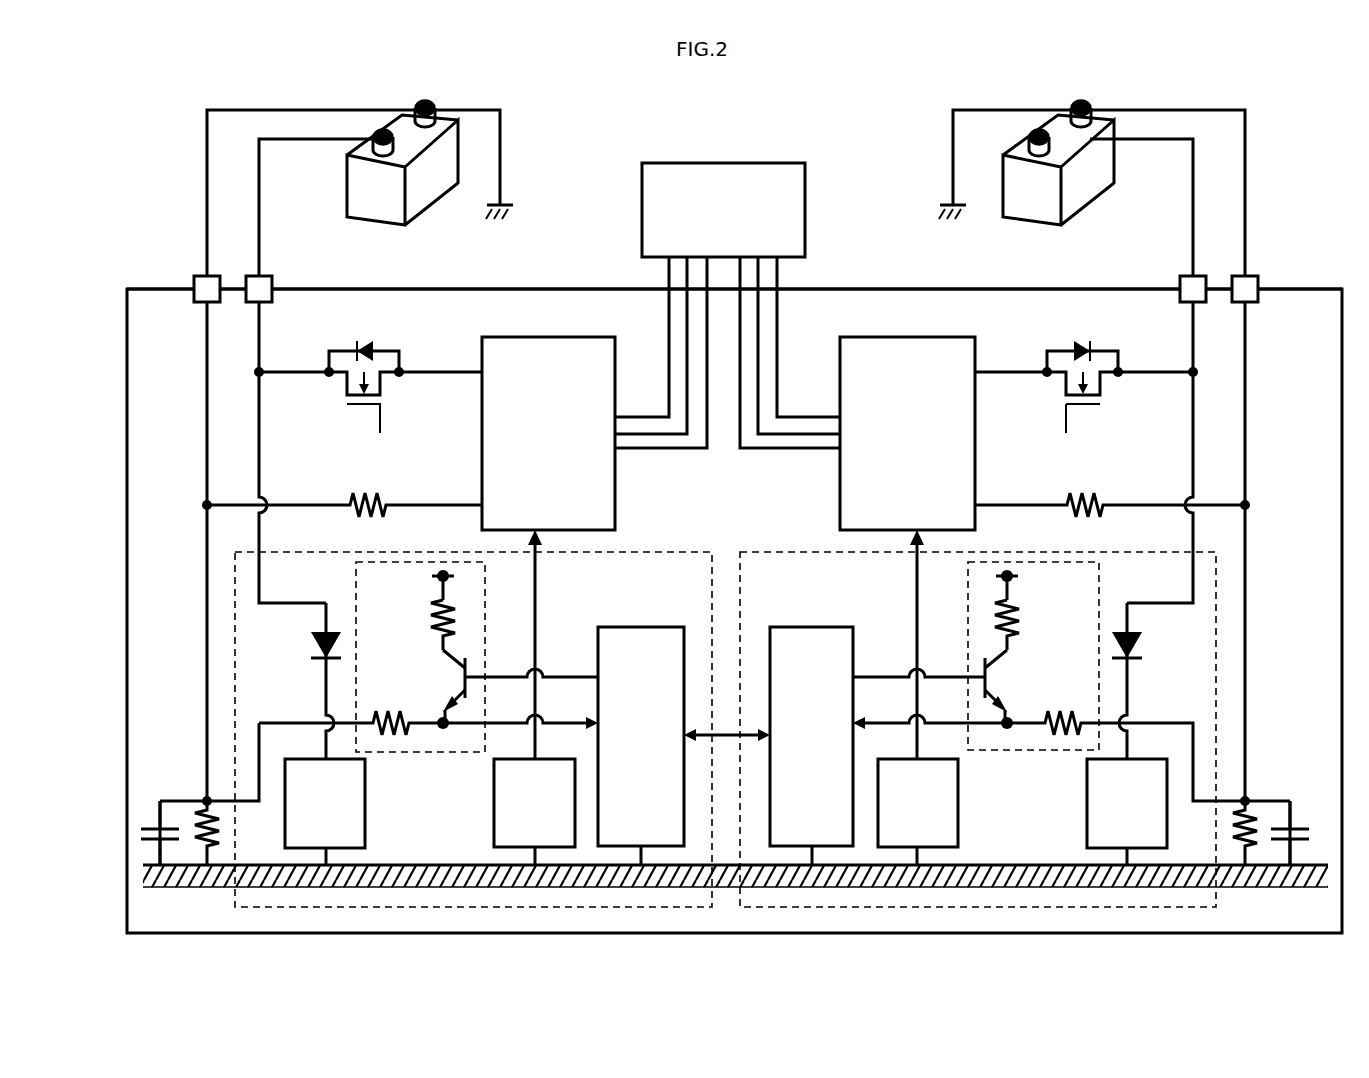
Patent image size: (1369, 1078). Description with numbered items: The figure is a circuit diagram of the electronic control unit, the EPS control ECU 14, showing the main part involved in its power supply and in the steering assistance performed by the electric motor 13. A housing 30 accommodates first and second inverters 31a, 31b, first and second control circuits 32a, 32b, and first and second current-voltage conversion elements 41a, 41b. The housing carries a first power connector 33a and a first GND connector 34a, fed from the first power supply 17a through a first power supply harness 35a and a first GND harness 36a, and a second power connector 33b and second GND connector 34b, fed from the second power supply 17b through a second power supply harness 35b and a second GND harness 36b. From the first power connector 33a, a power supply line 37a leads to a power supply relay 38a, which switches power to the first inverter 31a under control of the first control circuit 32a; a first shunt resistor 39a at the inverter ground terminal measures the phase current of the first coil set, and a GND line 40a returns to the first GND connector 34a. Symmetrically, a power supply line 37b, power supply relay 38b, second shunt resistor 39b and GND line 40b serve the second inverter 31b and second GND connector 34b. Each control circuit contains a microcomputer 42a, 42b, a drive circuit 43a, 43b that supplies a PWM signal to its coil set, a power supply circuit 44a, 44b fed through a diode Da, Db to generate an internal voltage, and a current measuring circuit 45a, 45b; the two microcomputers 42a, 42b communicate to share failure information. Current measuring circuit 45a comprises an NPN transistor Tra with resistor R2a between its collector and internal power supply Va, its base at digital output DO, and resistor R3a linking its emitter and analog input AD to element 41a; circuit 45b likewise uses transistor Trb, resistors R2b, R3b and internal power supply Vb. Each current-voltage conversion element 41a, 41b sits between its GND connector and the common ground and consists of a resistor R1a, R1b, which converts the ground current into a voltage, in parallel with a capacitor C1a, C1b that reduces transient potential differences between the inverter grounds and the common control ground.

The electric motor 13 is at (718, 163).
The EPS control ECU 14 is at (563, 279).
The first power supply 17a is at (424, 200).
The second power supply 17b is at (1085, 187).
The housing 30 is at (505, 288).
The first inverter 31a is at (512, 337).
The second inverter 31b is at (874, 337).
The first control circuit 32a is at (664, 552).
The second control circuit 32b is at (792, 552).
The first power connector 33a is at (273, 280).
The second power connector 33b is at (1180, 278).
The first GND connector 34a is at (194, 278).
The second GND connector 34b is at (1258, 278).
The first power supply harness 35a is at (259, 202).
The second power supply harness 35b is at (1193, 204).
The first GND harness 36a is at (207, 200).
The second GND harness 36b is at (1245, 203).
The power supply line 37a is at (259, 358).
The power supply line 37b is at (1193, 358).
The power supply relay 38a is at (346, 400).
The power supply relay 38b is at (1102, 396).
The first shunt resistor 39a is at (376, 496).
The second shunt resistor 39b is at (1074, 496).
The GND line 40a is at (207, 380).
The GND line 40b is at (1245, 404).
The first current-voltage conversion element 41a is at (160, 768).
The second current-voltage conversion element 41b is at (1285, 778).
The microcomputer 42a is at (598, 650).
The microcomputer 42b is at (853, 650).
The drive circuit 43a is at (494, 808).
The drive circuit 43b is at (958, 808).
The power supply circuit 44a is at (365, 810).
The power supply circuit 44b is at (1087, 810).
The current measuring circuit 45a is at (356, 612).
The current measuring circuit 45b is at (1099, 610).
The capacitor C1a is at (146, 828).
The capacitor C1b is at (1304, 830).
The resistor R1a is at (222, 848).
The resistor R1b is at (1236, 840).
The resistor R2a is at (430, 632).
The resistor R2b is at (1020, 632).
The resistor R3a is at (392, 720).
The resistor R3b is at (1062, 720).
The diode Da is at (322, 664).
The diode Db is at (1130, 664).
The NPN transistor Tra is at (448, 668).
The NPN transistor Trb is at (1000, 670).
The internal power supply Va is at (425, 583).
The internal power supply Vb is at (1027, 583).